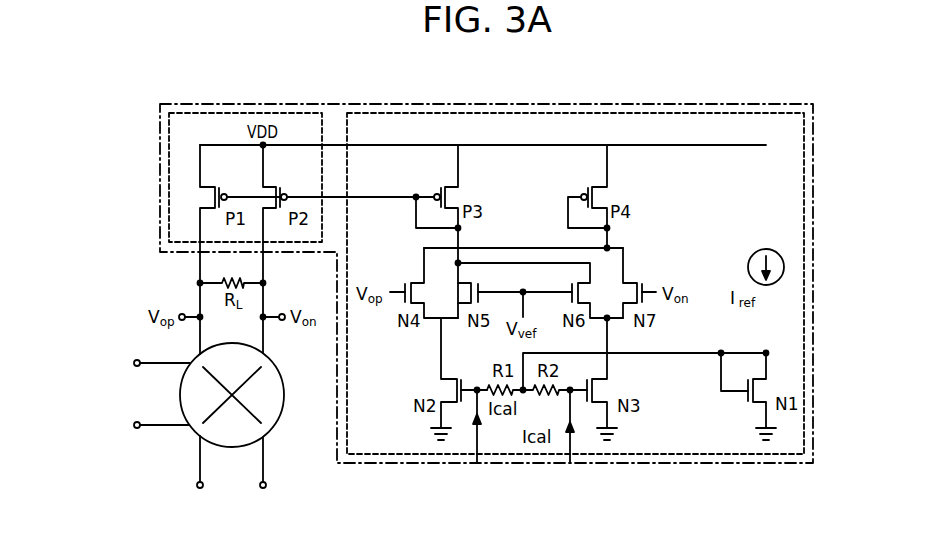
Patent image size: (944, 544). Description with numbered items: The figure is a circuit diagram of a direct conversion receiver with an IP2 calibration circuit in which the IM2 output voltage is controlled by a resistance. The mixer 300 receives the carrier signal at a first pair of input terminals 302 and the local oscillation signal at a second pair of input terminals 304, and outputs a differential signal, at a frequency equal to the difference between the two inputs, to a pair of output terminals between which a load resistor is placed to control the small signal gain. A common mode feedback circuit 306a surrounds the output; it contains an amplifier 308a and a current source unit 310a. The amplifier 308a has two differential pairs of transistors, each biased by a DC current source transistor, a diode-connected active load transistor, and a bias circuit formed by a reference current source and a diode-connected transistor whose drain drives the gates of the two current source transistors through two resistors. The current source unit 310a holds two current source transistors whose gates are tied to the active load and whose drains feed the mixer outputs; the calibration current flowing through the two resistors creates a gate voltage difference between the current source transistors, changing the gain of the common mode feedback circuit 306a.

The mixer 300 is at (282, 382).
The first pair of input terminals 302 is at (163, 425).
The second pair of input terminals 304 is at (200, 468).
The common mode feedback circuit 306a is at (683, 104).
The amplifier 308a is at (670, 454).
The current source unit 310a is at (160, 172).